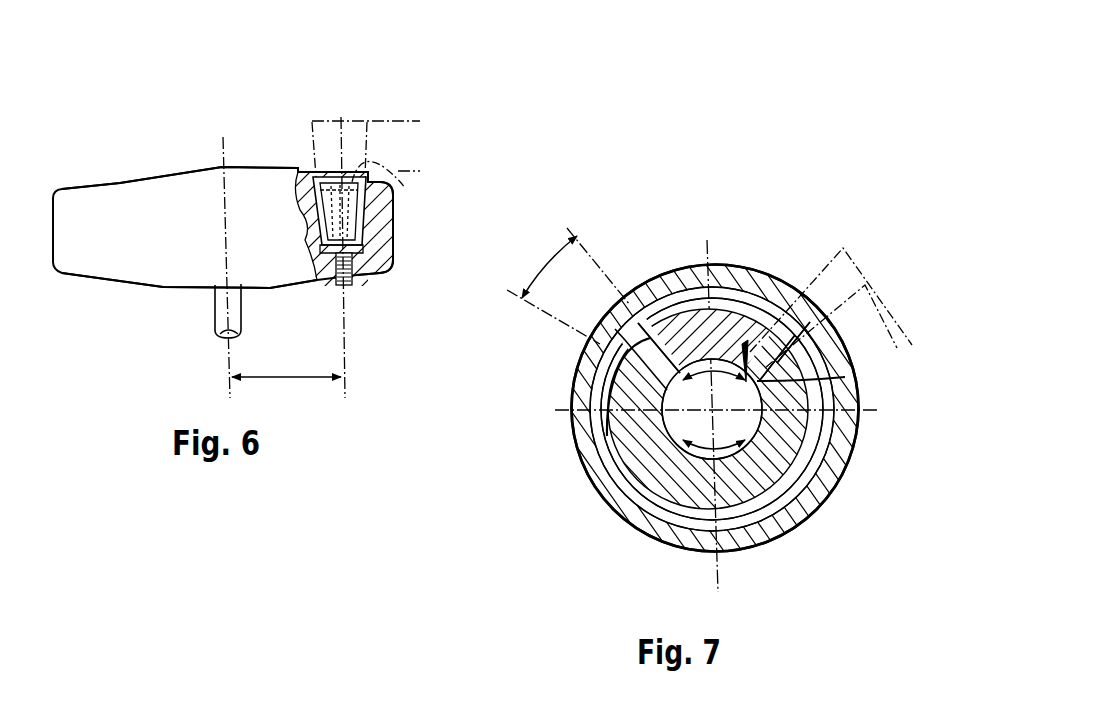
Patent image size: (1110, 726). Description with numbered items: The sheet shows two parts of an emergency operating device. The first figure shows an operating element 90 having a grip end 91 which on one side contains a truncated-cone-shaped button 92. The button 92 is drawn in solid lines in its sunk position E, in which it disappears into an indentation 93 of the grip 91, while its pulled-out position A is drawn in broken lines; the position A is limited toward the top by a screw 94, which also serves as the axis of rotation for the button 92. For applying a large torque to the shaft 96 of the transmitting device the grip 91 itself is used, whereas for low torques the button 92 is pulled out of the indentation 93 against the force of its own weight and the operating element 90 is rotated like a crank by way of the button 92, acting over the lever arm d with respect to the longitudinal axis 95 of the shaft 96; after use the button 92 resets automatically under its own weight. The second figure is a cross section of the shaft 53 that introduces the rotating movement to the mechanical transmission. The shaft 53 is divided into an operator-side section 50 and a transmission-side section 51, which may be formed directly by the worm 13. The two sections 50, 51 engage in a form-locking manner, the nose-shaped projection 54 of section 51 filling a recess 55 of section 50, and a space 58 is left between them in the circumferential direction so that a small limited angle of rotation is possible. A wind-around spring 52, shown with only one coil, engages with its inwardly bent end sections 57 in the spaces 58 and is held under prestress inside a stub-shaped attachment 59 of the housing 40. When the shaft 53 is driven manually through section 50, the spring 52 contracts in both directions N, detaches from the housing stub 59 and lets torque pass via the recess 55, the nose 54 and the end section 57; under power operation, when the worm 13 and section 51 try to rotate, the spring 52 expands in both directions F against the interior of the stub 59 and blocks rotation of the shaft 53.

In FIG. 6, the operating element 90 is at (158, 114).
In FIG. 6, the grip end 91 is at (176, 279).
In FIG. 6, the truncated-cone-shaped button 92 is at (365, 208).
In FIG. 6, the indentation 93 is at (350, 278).
In FIG. 6, the screw 94 is at (400, 186).
In FIG. 6, the longitudinal axis 95 is at (252, 135).
In FIG. 6, the shaft 96 is at (217, 320).
In FIG. 6, the pulled-out position A is at (376, 106).
In FIG. 6, the sunk position E is at (395, 166).
In FIG. 6, the lever arm d is at (265, 380).
In FIG. 7, the operator-side section 50 is at (661, 485).
In FIG. 7, the transmission-side section 51 is at (737, 318).
In FIG. 7, the worm 13 is at (785, 351).
In FIG. 7, the wind-around spring 52 is at (851, 448).
In FIG. 7, the shaft 53 is at (810, 485).
In FIG. 7, the nose-shaped projection 54 is at (673, 306).
In FIG. 7, the recess 55 is at (830, 288).
In FIG. 7, the inwardly bent end sections 57 is at (848, 378).
In FIG. 7, the space 58 is at (580, 440).
In FIG. 7, the stub-shaped attachment 59 is at (782, 532).
In FIG. 7, the housing 40 is at (715, 408).
In FIG. 7, the double arrow F is at (714, 389).
In FIG. 7, the double arrow N is at (717, 431).